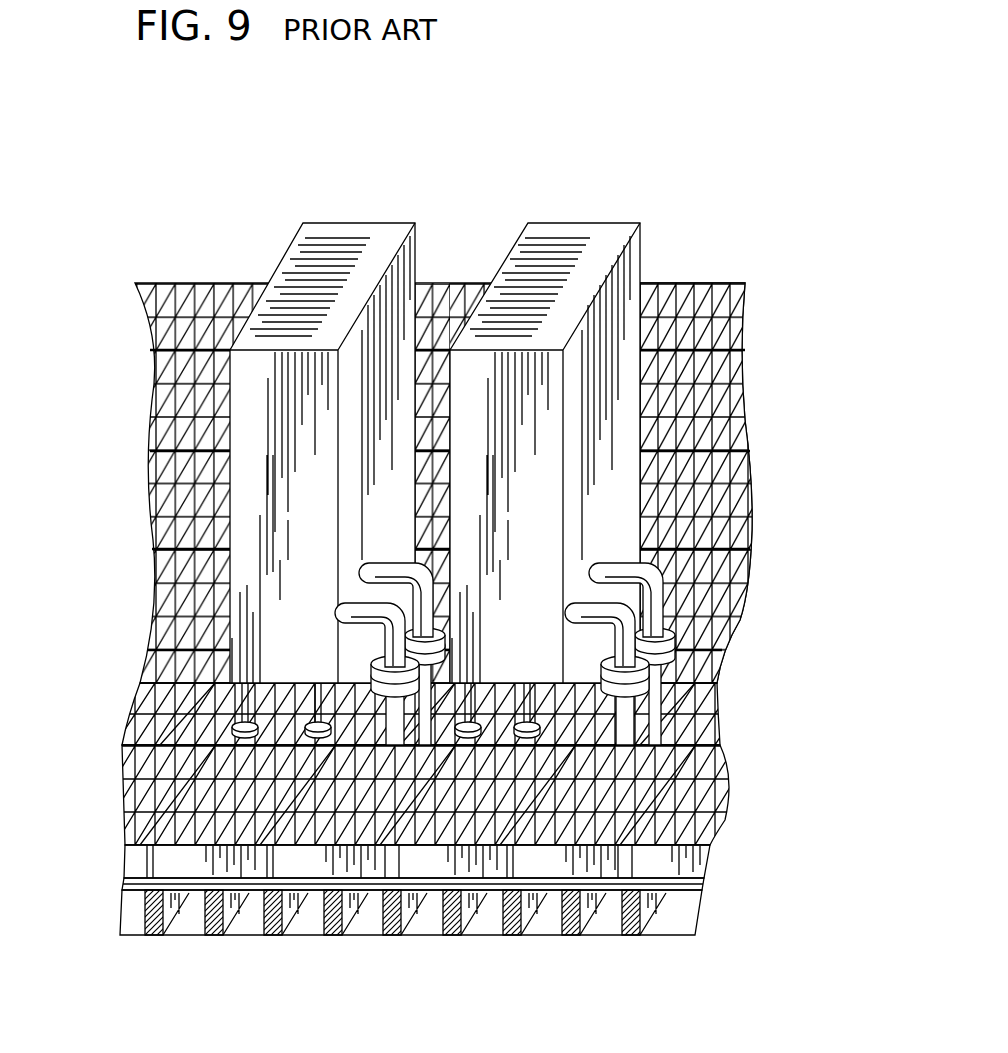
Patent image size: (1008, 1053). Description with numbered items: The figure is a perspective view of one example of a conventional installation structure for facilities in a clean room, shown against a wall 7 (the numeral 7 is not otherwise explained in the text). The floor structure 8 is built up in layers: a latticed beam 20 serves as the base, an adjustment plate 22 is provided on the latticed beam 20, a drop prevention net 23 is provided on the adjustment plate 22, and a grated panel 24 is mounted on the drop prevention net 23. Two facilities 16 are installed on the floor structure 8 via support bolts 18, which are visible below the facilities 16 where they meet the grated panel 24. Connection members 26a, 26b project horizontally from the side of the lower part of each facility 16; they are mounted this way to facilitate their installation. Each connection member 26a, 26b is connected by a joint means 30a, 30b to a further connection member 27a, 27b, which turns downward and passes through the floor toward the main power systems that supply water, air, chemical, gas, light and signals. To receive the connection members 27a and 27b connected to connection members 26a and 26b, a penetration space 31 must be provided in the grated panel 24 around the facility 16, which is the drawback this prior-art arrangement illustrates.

The housing wall 7 is at (198, 253).
The facility 16 is at (338, 235).
The support bolt 18 is at (243, 700).
The connection member 26a is at (668, 578).
The connection member 26b is at (636, 612).
The joint means 30a is at (682, 641).
The joint means 30b is at (652, 684).
The connection member 27a is at (684, 660).
The connection member 27b is at (650, 695).
The penetration space 31 is at (634, 740).
The grated panel 24 is at (705, 860).
The drop prevention net 23 is at (700, 885).
The adjustment plate 22 is at (700, 893).
The latticed beam 20 is at (633, 910).
The floor structure 8 is at (503, 861).